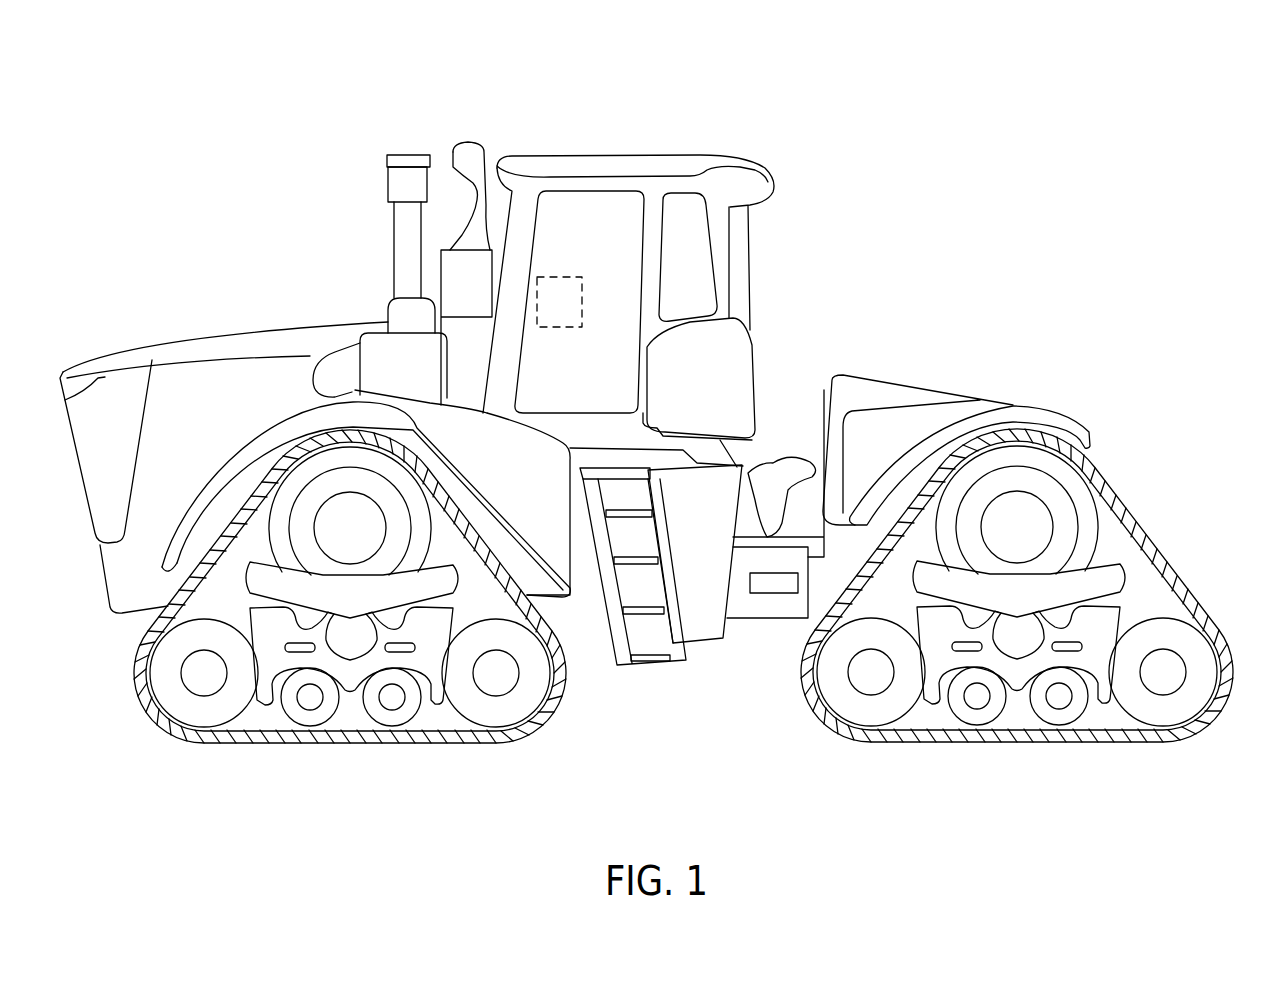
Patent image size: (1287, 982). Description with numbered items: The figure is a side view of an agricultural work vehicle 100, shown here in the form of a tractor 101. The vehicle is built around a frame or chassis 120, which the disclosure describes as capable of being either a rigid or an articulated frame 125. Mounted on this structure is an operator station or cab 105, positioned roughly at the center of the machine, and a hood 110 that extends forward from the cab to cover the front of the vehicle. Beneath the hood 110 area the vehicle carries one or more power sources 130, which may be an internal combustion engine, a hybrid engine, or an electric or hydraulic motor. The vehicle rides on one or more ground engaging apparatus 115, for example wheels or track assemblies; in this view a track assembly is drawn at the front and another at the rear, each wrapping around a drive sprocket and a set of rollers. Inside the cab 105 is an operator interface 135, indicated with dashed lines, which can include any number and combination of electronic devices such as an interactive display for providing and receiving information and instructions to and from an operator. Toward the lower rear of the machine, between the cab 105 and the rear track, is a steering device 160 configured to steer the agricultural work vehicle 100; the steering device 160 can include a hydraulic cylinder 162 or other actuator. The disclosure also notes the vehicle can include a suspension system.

The agricultural work vehicle 100 is at (883, 156).
The tractor 101 is at (862, 73).
The cab 105 is at (607, 158).
The hood 110 is at (148, 343).
The ground engaging apparatus 115 is at (150, 704).
The frame or chassis 120 is at (727, 677).
The frame 125 is at (708, 560).
The power source 130 is at (237, 387).
The operator interface 135 is at (567, 290).
The steering device 160 is at (790, 593).
The hydraulic cylinder 162 is at (758, 585).